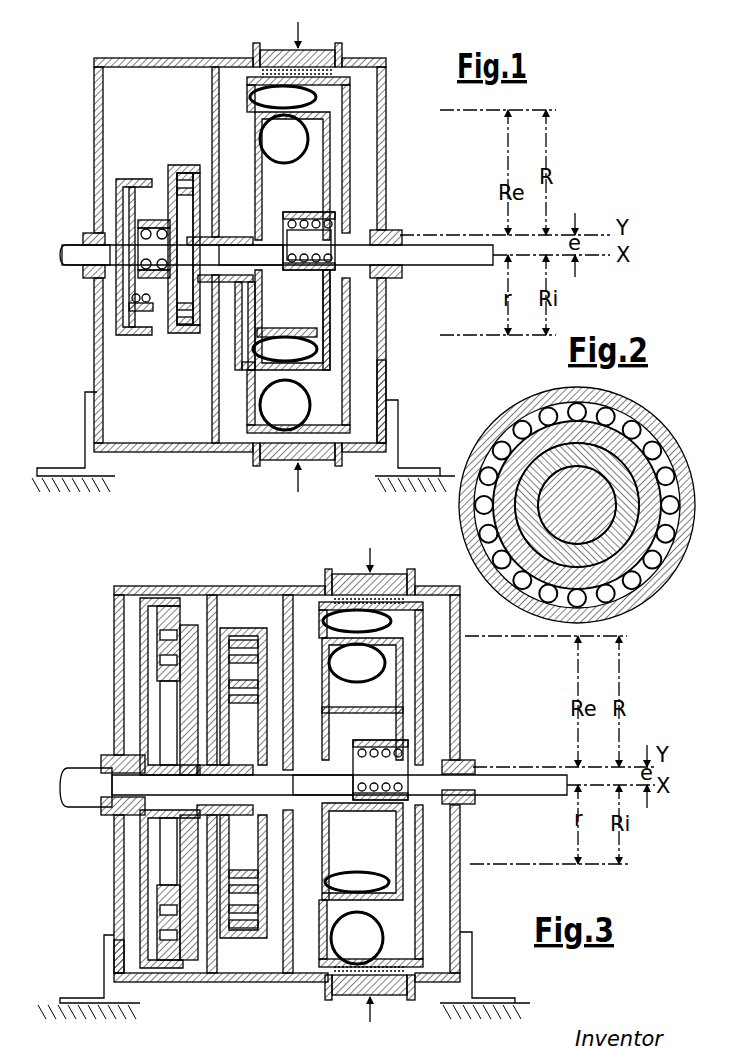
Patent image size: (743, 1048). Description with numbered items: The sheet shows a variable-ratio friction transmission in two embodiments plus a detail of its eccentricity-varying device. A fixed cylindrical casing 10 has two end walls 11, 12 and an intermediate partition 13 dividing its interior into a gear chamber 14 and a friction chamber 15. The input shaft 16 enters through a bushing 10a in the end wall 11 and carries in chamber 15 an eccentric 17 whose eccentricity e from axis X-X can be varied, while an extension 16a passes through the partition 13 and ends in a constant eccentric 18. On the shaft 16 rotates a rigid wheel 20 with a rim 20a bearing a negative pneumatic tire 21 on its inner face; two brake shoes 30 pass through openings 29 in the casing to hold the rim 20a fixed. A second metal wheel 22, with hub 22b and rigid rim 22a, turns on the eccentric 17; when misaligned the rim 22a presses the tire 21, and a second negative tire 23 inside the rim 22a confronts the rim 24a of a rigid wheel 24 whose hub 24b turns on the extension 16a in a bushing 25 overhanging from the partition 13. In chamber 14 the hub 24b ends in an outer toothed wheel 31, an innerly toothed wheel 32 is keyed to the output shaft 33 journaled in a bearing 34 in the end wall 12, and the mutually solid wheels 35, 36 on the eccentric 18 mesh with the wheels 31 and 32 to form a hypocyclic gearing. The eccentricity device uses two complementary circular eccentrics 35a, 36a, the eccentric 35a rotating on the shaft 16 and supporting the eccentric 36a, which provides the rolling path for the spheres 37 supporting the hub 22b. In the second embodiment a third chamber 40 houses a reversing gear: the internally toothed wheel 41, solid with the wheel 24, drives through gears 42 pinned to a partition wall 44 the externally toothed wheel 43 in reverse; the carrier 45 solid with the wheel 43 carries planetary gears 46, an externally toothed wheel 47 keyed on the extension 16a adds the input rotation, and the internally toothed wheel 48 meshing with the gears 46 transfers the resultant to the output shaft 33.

In FIG. 1, the casing 10 is at (149, 453).
In FIG. 1, the bushing 10a is at (387, 280).
In FIG. 1, the end wall 11 is at (388, 368).
In FIG. 1, the end wall 12 is at (95, 369).
In FIG. 3, the end wall 12 is at (114, 866).
In FIG. 1, the intermediate partition 13 is at (212, 86).
In FIG. 1, the chamber 14 is at (175, 423).
In FIG. 3, the chamber 14 is at (132, 915).
In FIG. 1, the chamber 15 is at (368, 428).
In FIG. 3, the chamber 15 is at (440, 907).
In FIG. 1, the input shaft 16 is at (456, 266).
In FIG. 2, the input shaft 16 is at (577, 505).
In FIG. 3, the input shaft 16 is at (509, 796).
In FIG. 1, the shaft extension 16a is at (275, 265).
In FIG. 3, the shaft extension 16a is at (346, 797).
In FIG. 1, the eccentric 17 is at (292, 232).
In FIG. 1, the eccentric 18 is at (155, 220).
In FIG. 1, the wheel 20 is at (353, 158).
In FIG. 3, the wheel 20 is at (425, 681).
In FIG. 1, the rim 20a is at (340, 87).
In FIG. 1, the pneumatic tire 21 is at (252, 96).
In FIG. 1, the second metal wheel 22 is at (332, 184).
In FIG. 1, the rim 22a is at (320, 370).
In FIG. 1, the hub 22b is at (327, 208).
In FIG. 2, the hub 22b is at (660, 447).
In FIG. 1, the second negative tire 23 is at (255, 358).
In FIG. 1, the rigid wheel 24 is at (252, 327).
In FIG. 3, the rigid wheel 24 is at (330, 843).
In FIG. 1, the rim 24a is at (287, 320).
In FIG. 1, the hub 24b is at (235, 237).
In FIG. 1, the bushing 25 is at (231, 284).
In FIG. 1, the openings 29 is at (253, 46).
In FIG. 1, the brake shoes 30 is at (320, 49).
In FIG. 1, the outer toothed wheel 31 is at (192, 173).
In FIG. 1, the innerly toothed wheel 32 is at (122, 179).
In FIG. 1, the output shaft 33 is at (72, 243).
In FIG. 3, the output shaft 33 is at (85, 768).
In FIG. 1, the bearing 34 is at (92, 275).
In FIG. 3, the bearing 34 is at (106, 812).
In FIG. 1, the innerly toothed wheel 35 is at (172, 165).
In FIG. 2, the eccentric 35a is at (577, 505).
In FIG. 1, the outerly toothed wheel 36 is at (147, 313).
In FIG. 2, the eccentric 36a is at (577, 506).
In FIG. 2, the spheres 37 is at (657, 562).
In FIG. 3, the chamber 40 is at (242, 962).
In FIG. 3, the internally toothed wheel 41 is at (255, 628).
In FIG. 3, the gears 42 is at (258, 642).
In FIG. 3, the externally toothed wheel 43 is at (258, 700).
In FIG. 3, the partition wall 44 is at (212, 595).
In FIG. 3, the planetary wheel carrier 45 is at (190, 625).
In FIG. 3, the planetary gears 46 is at (162, 606).
In FIG. 3, the externally toothed wheel 47 is at (160, 679).
In FIG. 3, the internally toothed wheel 48 is at (140, 623).